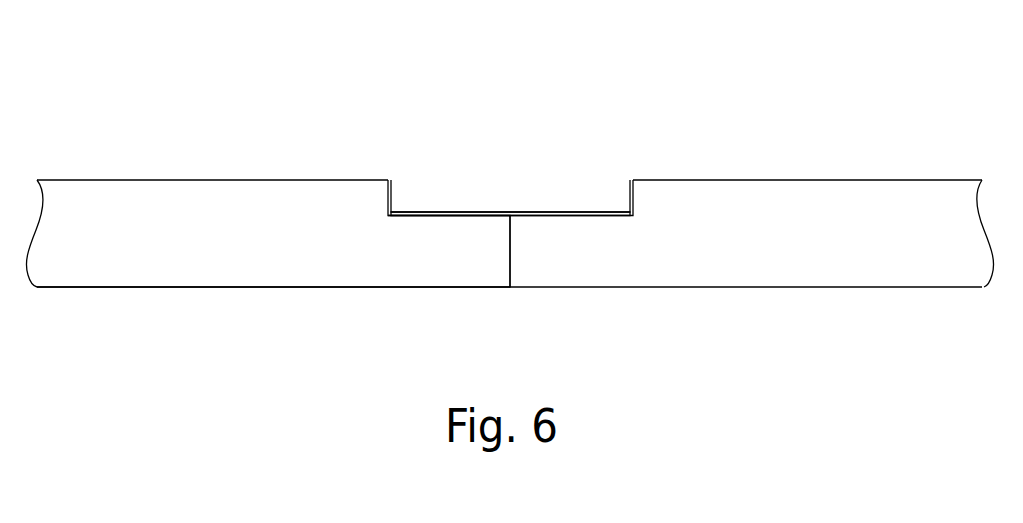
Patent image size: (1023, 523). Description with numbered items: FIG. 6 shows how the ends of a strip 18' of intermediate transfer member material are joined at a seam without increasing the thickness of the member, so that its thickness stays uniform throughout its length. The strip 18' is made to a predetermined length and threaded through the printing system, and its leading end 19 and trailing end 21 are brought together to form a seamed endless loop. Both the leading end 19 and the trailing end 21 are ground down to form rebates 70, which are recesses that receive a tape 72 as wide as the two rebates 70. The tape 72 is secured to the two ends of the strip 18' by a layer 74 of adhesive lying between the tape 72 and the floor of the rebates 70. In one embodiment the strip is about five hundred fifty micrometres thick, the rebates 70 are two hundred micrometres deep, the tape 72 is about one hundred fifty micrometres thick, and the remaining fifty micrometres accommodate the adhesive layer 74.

The strip 18' is at (509, 161).
The leading end 19 is at (472, 269).
The trailing end 21 is at (533, 270).
The rebates 70 is at (418, 218).
The tape 72 is at (523, 190).
The layer of adhesive 74 is at (599, 217).